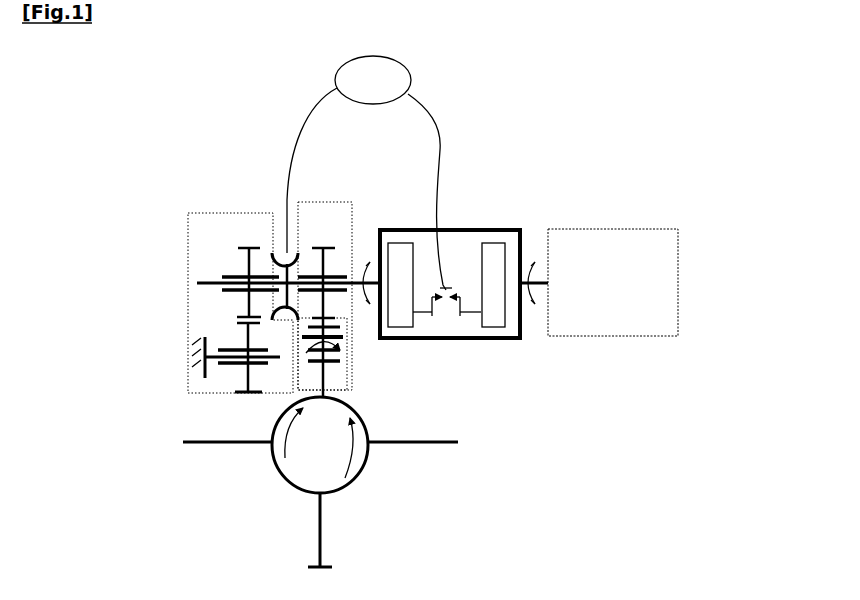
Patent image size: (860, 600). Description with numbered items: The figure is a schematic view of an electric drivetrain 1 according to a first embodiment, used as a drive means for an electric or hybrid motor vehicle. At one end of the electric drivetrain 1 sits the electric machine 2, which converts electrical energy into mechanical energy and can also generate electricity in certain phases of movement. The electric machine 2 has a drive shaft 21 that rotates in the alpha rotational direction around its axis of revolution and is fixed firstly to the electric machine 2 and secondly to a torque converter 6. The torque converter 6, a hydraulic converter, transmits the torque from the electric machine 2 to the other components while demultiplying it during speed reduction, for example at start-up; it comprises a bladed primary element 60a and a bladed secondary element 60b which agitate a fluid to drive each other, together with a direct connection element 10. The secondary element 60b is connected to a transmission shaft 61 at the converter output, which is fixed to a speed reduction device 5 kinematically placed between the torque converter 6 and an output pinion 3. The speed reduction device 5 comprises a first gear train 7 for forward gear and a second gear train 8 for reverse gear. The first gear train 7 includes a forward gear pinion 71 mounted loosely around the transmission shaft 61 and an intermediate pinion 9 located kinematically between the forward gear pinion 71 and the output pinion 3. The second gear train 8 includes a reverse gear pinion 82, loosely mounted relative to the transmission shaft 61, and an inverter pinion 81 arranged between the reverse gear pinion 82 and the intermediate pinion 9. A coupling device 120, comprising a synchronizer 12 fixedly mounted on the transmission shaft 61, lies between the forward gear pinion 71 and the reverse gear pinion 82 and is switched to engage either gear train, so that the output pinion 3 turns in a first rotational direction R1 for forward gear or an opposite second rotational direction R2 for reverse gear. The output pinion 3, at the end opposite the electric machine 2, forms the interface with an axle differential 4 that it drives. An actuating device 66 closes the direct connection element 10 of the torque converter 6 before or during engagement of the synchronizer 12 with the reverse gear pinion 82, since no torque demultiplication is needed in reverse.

The electric drivetrain 1 is at (765, 238).
The electric machine 2 is at (637, 313).
The drive shaft 21 is at (545, 282).
The direct connection element 10 is at (450, 224).
The primary element 60a is at (495, 255).
The secondary element 60b is at (400, 257).
The torque converter 6 is at (485, 340).
The actuating device 66 is at (337, 74).
The speed reduction device 5 is at (219, 194).
The first gear train 7 is at (326, 203).
The forward gear pinion 71 is at (334, 250).
The transmission shaft 61 is at (352, 235).
The intermediate pinion 9 is at (335, 340).
The second gear train 8 is at (188, 228).
The inverter pinion 81 is at (243, 365).
The reverse gear pinion 82 is at (240, 262).
The synchronizer 12 is at (278, 250).
The coupling device 120 is at (265, 230).
The output pinion 3 is at (323, 375).
The axle differential 4 is at (304, 491).
The first rotational direction R1 is at (360, 468).
The second rotational direction R2 is at (270, 443).